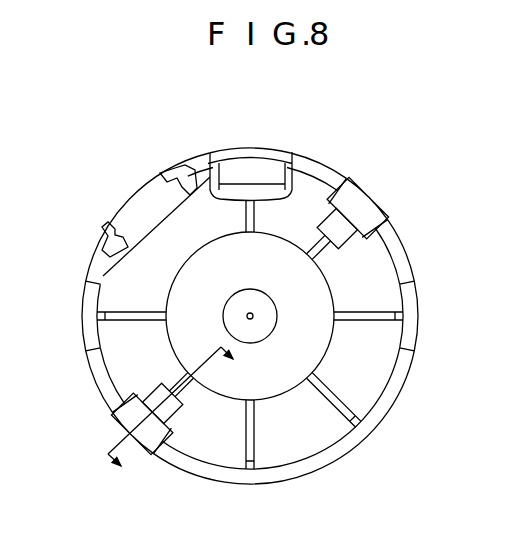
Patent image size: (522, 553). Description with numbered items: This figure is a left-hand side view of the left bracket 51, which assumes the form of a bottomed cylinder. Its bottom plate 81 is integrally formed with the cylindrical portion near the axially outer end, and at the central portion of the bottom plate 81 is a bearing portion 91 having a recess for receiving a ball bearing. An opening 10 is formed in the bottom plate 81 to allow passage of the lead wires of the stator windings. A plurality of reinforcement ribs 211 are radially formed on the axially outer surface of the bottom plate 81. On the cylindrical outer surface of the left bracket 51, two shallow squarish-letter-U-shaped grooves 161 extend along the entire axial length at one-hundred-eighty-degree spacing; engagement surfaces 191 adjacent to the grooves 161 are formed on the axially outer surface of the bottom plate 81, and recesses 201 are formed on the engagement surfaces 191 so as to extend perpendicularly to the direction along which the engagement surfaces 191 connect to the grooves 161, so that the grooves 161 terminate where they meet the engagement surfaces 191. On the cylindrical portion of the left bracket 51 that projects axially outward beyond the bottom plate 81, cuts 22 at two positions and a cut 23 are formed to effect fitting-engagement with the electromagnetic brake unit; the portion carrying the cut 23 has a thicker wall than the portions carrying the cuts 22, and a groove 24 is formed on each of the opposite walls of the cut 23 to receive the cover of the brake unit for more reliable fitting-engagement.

The left bracket 51 is at (410, 170).
The opening 10 is at (255, 176).
The reinforcement ribs 211 is at (244, 212).
The bearing portion 91 is at (282, 396).
The cuts 22 is at (92, 318).
The squarish-letter-U-shaped grooves 161 is at (386, 207).
The bottom plate 81 is at (374, 390).
The engagement surfaces 191 is at (357, 203).
The recesses 201 is at (352, 238).
The cut 23 is at (115, 230).
The groove 24 is at (113, 225).